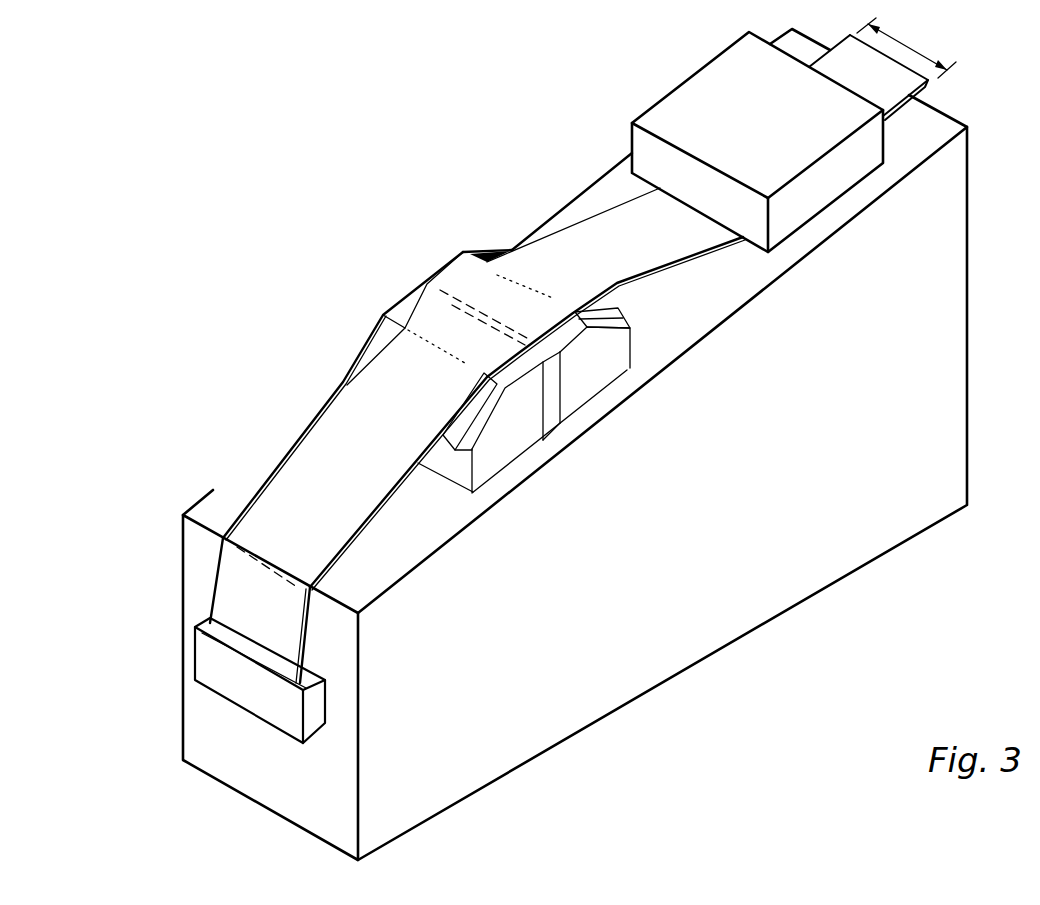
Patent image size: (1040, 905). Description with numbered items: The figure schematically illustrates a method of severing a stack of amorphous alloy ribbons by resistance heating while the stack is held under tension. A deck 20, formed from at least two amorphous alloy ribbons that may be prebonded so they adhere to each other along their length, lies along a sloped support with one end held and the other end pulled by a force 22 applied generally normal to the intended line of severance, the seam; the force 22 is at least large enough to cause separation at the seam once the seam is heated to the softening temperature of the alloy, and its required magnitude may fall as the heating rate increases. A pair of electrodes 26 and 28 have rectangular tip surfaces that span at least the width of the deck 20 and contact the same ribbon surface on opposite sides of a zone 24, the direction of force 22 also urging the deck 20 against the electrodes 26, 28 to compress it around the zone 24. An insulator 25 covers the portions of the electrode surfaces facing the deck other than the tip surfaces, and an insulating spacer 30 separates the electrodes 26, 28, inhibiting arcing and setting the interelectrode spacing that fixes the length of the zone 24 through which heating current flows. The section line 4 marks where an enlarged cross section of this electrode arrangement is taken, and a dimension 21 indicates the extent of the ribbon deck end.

The deck 20 is at (917, 97).
The strip end length dimension 21 is at (913, 48).
The force 22 is at (255, 730).
The zone 24 is at (427, 282).
The insulator 25 is at (613, 310).
The electrode 26 is at (522, 447).
The electrode 28 is at (613, 372).
The insulating spacer 30 is at (553, 425).
The line 4- 4 is at (579, 292).